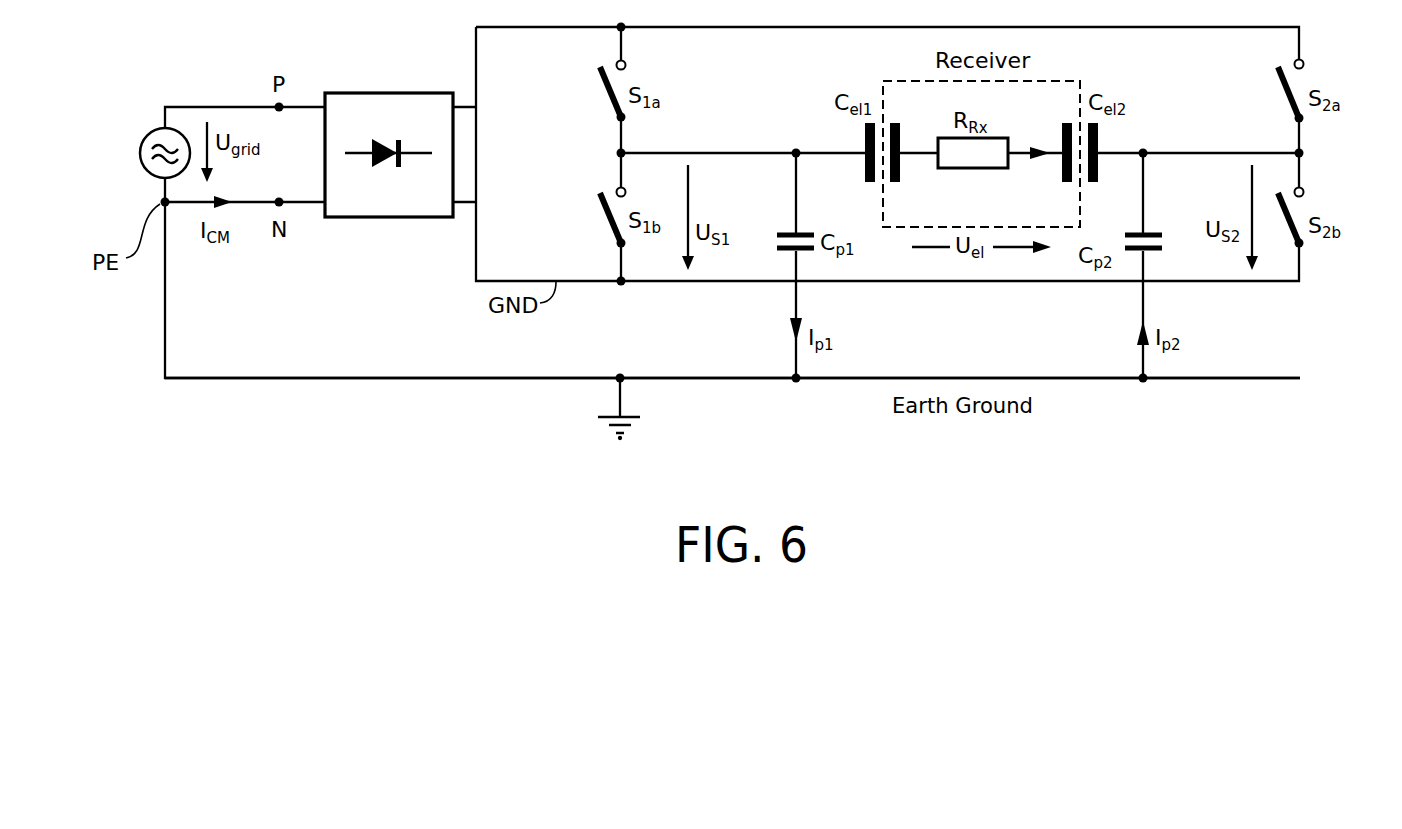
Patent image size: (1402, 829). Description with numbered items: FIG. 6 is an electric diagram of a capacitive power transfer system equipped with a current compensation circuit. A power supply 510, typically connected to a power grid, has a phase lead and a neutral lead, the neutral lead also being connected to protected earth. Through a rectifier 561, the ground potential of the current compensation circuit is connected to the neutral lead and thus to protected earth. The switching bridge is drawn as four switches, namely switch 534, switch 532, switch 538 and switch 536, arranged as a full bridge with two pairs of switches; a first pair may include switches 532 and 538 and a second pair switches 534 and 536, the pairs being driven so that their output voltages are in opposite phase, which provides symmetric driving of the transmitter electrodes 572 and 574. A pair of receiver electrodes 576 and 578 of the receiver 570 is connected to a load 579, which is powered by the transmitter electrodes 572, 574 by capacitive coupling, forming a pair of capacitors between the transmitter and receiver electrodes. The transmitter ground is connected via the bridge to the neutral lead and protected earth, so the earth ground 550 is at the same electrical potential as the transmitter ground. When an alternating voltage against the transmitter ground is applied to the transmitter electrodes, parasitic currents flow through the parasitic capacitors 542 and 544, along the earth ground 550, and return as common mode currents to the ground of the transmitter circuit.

The power supply 510 is at (146, 136).
The rectifier 561 is at (390, 93).
The switch S1a 534 is at (600, 95).
The switch S1b 532 is at (600, 221).
The switch S2a 538 is at (1307, 80).
The switch S2b 536 is at (1307, 205).
The parasitic capacitor 542 is at (783, 232).
The parasitic capacitor 544 is at (1146, 232).
The transmitter electrode 572 is at (862, 137).
The transmitter electrode 574 is at (1100, 137).
The receiver 570 is at (1062, 81).
The receiver electrode 576 is at (901, 137).
The receiver electrode 578 is at (1062, 137).
The load 579 is at (952, 170).
The earth ground 550 is at (838, 380).